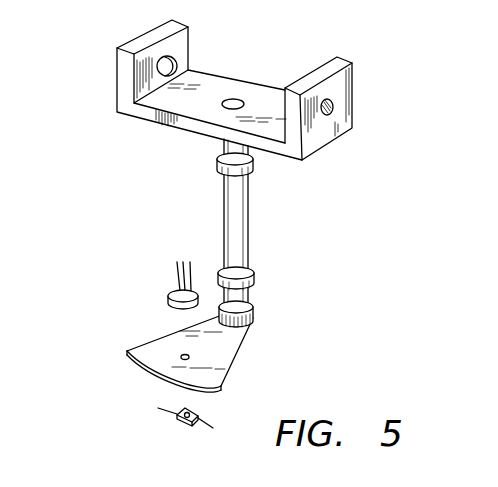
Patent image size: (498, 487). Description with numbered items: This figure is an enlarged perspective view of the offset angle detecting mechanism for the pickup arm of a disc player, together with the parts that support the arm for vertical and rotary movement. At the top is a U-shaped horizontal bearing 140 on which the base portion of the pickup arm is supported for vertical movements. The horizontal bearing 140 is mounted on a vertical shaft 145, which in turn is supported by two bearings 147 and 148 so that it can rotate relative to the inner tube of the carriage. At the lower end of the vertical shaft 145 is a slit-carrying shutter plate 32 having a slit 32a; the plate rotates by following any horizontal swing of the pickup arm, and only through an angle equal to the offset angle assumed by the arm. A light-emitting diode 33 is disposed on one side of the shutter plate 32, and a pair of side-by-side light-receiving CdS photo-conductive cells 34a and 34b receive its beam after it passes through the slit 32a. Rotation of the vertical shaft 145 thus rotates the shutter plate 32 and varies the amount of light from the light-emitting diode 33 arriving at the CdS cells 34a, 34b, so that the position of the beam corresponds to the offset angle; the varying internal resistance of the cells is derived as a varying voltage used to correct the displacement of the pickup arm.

The U-shaped horizontal bearing 140 is at (222, 85).
The vertical shaft 145 is at (243, 217).
The bearing 147 is at (217, 160).
The bearing 148 is at (255, 278).
The slit-carrying shutter plate 32 is at (222, 347).
The slit 32a is at (183, 354).
The CdS photo-conductive cell 34a is at (126, 284).
The CdS photo-conductive cell 34b is at (168, 298).
The light-emitting diode 33 is at (181, 423).